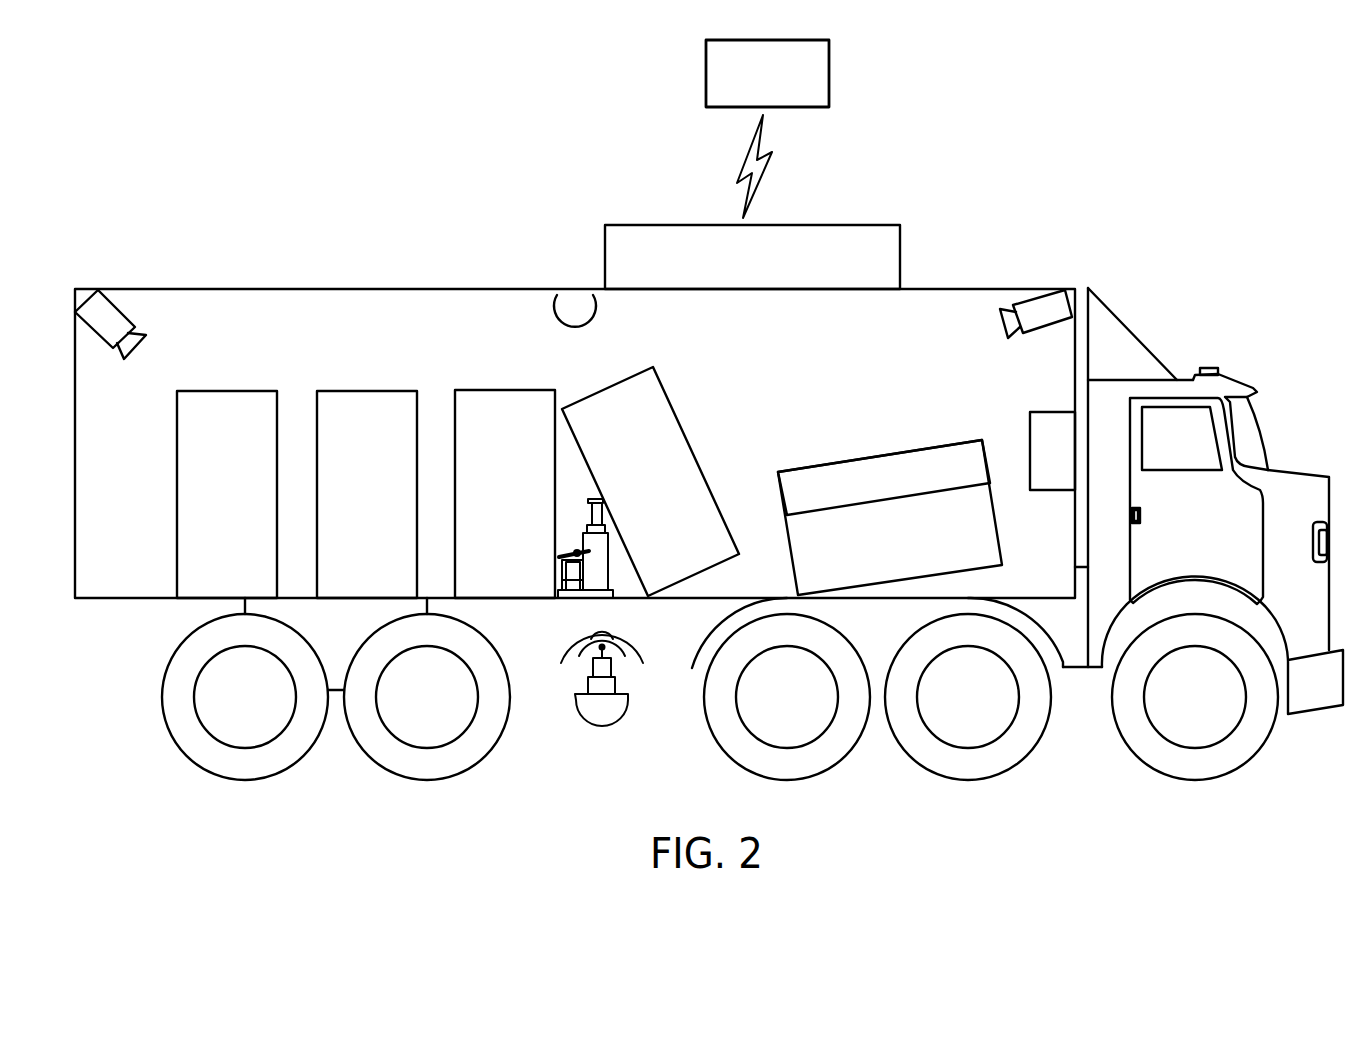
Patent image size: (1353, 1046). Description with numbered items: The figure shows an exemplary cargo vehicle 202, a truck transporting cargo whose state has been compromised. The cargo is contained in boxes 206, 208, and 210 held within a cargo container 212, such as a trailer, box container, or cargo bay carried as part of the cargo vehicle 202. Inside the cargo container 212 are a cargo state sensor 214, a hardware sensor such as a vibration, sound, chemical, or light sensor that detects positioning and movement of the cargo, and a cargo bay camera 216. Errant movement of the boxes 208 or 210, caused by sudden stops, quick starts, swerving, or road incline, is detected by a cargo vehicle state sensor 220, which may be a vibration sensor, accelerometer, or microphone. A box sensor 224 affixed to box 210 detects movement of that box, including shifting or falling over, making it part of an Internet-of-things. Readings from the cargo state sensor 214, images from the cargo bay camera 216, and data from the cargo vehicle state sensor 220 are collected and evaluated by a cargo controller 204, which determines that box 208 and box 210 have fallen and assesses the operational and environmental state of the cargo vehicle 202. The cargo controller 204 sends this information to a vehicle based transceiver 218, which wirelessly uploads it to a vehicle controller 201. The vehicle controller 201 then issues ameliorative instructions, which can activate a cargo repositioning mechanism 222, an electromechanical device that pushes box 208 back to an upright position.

The vehicle controller 201 is at (706, 72).
The cargo vehicle 202 is at (709, 500).
The cargo controller 204 is at (1030, 420).
The box 206 is at (530, 506).
The box 208 is at (677, 496).
The box 210 is at (918, 556).
The cargo container 212 is at (170, 289).
The cargo state sensor 214 is at (570, 297).
The cargo bay camera 216 is at (1040, 295).
The vehicle based transceiver 218 is at (875, 225).
The cargo vehicle state sensor 220 is at (598, 732).
The cargo repositioning mechanism 222 is at (610, 557).
The box sensor 224 is at (908, 493).